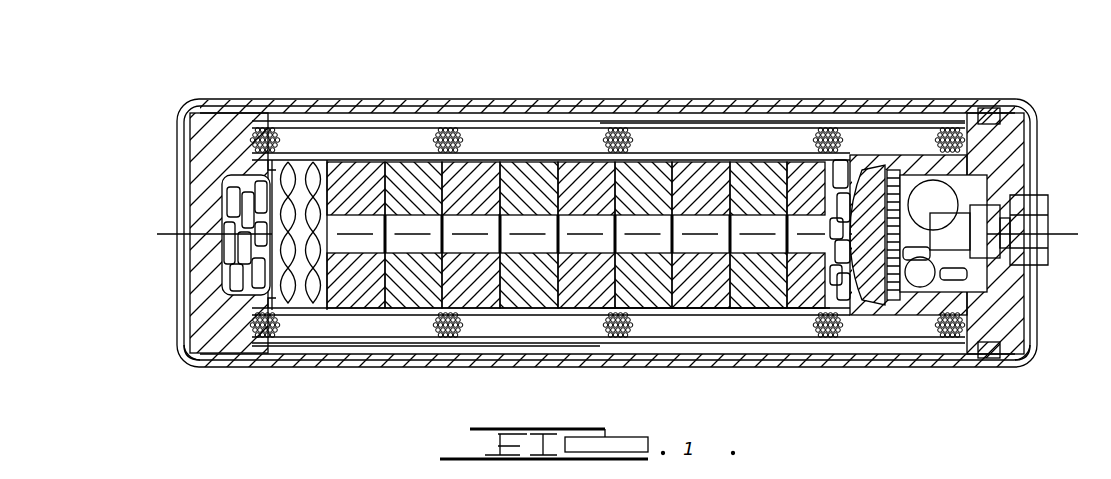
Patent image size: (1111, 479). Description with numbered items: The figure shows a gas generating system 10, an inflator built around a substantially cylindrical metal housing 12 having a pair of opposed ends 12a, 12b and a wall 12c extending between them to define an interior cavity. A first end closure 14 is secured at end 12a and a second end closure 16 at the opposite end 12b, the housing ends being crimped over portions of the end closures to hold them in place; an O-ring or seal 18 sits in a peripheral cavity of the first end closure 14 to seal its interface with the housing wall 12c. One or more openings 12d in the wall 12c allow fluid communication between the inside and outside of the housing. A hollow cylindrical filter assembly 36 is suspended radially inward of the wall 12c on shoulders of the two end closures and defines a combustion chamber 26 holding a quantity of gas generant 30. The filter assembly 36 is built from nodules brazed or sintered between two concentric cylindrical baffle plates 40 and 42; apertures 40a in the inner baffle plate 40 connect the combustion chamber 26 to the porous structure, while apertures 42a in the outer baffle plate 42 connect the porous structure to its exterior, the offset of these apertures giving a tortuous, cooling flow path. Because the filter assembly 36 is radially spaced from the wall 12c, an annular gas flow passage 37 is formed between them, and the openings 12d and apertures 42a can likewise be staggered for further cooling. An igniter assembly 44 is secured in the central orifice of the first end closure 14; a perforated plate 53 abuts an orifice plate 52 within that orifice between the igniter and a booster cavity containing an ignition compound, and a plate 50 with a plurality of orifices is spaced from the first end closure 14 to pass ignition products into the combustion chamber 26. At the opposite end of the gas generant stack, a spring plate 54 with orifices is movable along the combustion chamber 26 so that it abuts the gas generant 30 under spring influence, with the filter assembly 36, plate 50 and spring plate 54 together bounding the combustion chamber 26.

The gas generating system 10 is at (248, 426).
The housing 12 is at (497, 368).
The end 12a is at (1024, 364).
The end 12b is at (197, 368).
The wall 12c is at (514, 116).
The openings 12d is at (325, 137).
The first end closure 14 is at (983, 322).
The second end closure 16 is at (193, 258).
The O-ring or seal 18 is at (985, 114).
The combustion chamber 26 is at (435, 162).
The gas generant 30 is at (697, 290).
The filter assembly 36 is at (605, 128).
The annular gas flow passage 37 is at (403, 348).
The baffle plate 40 is at (681, 158).
The apertures 40a is at (353, 318).
The baffle plate 42 is at (737, 122).
The apertures 42a is at (900, 340).
The igniter assembly 44 is at (1016, 190).
The plate 50 is at (833, 296).
The orifice plate 52 is at (872, 295).
The perforated plate 53 is at (888, 170).
The spring plate 54 is at (293, 101).